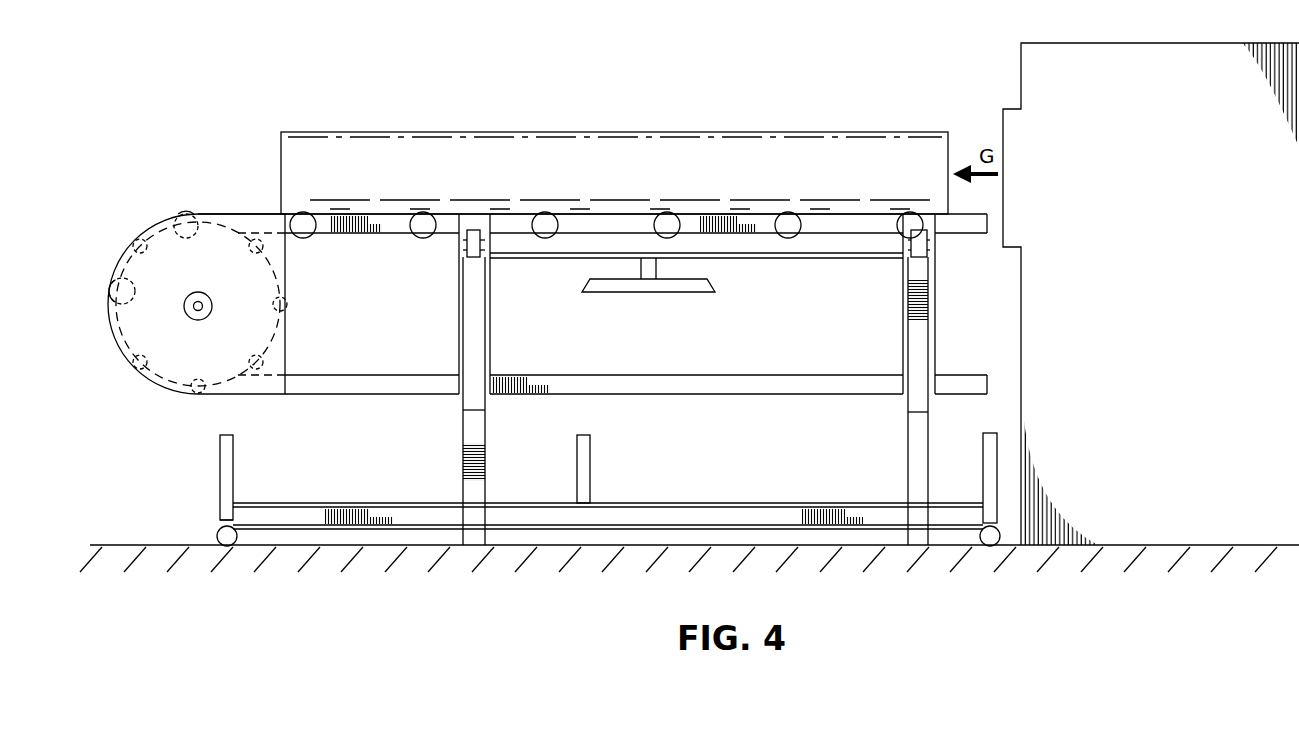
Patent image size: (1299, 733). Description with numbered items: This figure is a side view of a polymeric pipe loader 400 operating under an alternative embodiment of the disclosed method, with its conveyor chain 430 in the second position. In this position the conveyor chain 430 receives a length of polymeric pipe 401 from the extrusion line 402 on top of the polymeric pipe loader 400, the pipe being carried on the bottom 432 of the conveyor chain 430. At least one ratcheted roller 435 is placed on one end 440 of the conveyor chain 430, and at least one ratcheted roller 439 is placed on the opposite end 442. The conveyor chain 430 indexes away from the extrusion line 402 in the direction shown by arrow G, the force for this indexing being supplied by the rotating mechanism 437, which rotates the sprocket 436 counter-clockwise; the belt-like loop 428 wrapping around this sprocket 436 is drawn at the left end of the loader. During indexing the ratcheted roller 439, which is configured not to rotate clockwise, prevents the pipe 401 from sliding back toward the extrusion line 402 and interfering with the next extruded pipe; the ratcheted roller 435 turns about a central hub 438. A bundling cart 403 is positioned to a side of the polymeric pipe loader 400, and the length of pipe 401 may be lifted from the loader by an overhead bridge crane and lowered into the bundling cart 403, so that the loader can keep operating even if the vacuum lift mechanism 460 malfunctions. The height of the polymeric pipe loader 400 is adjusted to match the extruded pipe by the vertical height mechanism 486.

The polymeric pipe loader 400 is at (382, 95).
The length of polymeric pipe 401 is at (617, 132).
The extrusion line 402 is at (1196, 311).
The bundling cart 403 is at (700, 503).
The conveyor belt 428 is at (134, 382).
The conveyor chain 430 is at (298, 212).
The bottom of the conveyor chain 432 is at (376, 212).
The ratcheted roller 435 is at (112, 298).
The sprocket 436 is at (160, 392).
The rotating mechanism 437 is at (199, 320).
The axle 438 is at (196, 299).
The ratcheted roller 439 is at (910, 232).
The end of the conveyor chain 440 is at (108, 272).
The opposite end of the conveyor chain 442 is at (897, 211).
The vacuum lift mechanism 460 is at (655, 268).
The vertical height mechanism 486 is at (468, 360).